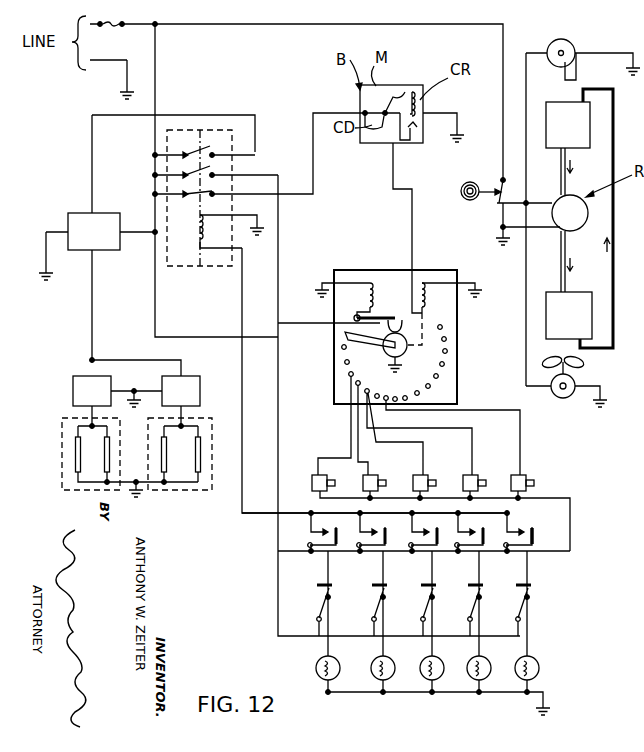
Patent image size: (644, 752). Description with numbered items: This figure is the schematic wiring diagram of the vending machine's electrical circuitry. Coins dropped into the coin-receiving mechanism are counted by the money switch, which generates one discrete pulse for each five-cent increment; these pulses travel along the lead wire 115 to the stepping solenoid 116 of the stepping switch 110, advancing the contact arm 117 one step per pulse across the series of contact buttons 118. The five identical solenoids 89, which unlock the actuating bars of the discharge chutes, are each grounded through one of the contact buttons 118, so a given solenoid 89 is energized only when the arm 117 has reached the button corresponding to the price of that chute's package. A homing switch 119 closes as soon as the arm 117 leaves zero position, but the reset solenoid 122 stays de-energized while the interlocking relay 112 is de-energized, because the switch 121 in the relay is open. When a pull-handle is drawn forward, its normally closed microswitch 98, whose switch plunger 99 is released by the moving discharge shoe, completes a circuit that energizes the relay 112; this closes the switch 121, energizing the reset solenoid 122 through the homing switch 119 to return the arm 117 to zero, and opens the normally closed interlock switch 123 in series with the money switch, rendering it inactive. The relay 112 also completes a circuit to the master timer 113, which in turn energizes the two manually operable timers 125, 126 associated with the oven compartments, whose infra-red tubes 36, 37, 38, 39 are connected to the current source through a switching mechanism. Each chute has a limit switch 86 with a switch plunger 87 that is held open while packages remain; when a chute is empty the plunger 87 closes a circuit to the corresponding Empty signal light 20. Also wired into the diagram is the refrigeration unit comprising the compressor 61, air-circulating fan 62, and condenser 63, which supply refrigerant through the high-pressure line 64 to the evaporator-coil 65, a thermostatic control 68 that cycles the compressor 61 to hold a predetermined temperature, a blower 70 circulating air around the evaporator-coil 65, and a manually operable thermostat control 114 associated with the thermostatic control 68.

The signal light 20 is at (316, 672).
The infra-red tube 36 is at (166, 460).
The infra-red tube 37 is at (75, 462).
The infra-red tube 38 is at (200, 450).
The infra-red tube 39 is at (104, 450).
The compressor 61 is at (575, 212).
The air-circulating fan 62 is at (567, 398).
The condenser 63 is at (584, 318).
The high-pressure line 64 is at (613, 128).
The evaporator-coil 65 is at (575, 118).
The thermostatic control 68 is at (462, 197).
The blower 70 is at (568, 45).
The limit switch 86 is at (330, 586).
The switch plunger 87 is at (330, 594).
The solenoid 89 is at (315, 478).
The microswitch 98 is at (516, 527).
The switch plunger 99 is at (543, 530).
The stepping switch 110 is at (457, 355).
The interlocking relay 112 is at (203, 130).
The master timer 113 is at (80, 228).
The manually operable thermostat control 114 is at (202, 148).
The lead wire 115 is at (393, 179).
The stepping solenoid 116 is at (424, 283).
The contact arm 117 is at (345, 347).
The contact button 118 is at (367, 397).
The homing switch 119 is at (376, 313).
The switch 121 is at (222, 172).
The reset solenoid 122 is at (363, 300).
The interlock switch 123 is at (217, 198).
The manually operable timer 125 is at (80, 384).
The manually operable timer 126 is at (195, 386).